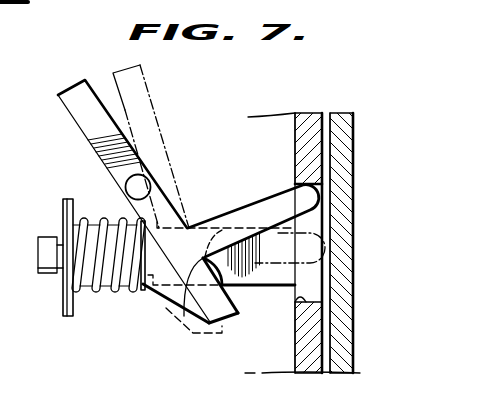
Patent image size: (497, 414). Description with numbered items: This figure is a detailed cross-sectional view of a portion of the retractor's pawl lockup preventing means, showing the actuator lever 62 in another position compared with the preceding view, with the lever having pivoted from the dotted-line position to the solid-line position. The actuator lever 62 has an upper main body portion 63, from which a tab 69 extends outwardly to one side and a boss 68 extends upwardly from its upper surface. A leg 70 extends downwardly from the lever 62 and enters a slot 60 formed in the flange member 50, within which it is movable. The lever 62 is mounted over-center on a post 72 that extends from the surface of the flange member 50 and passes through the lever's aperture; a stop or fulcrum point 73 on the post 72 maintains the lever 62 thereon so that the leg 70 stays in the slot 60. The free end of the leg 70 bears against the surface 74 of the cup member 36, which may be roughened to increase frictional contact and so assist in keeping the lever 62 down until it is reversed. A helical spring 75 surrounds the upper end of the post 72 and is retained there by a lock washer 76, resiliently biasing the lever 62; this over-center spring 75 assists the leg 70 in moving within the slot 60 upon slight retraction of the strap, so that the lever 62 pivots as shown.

The cup member 36 is at (350, 166).
The flange member 50 is at (295, 148).
The slot 60 is at (322, 292).
The actuator lever 62 is at (245, 333).
The upper main body portion 63 is at (82, 130).
The boss 68 is at (143, 287).
The tab 69 is at (146, 181).
The leg 70 is at (262, 206).
The post 72 is at (243, 287).
The fulcrum point 73 is at (187, 312).
The surface of cup member 74 is at (327, 203).
The helical spring 75 is at (100, 212).
The lock washer 76 is at (63, 207).